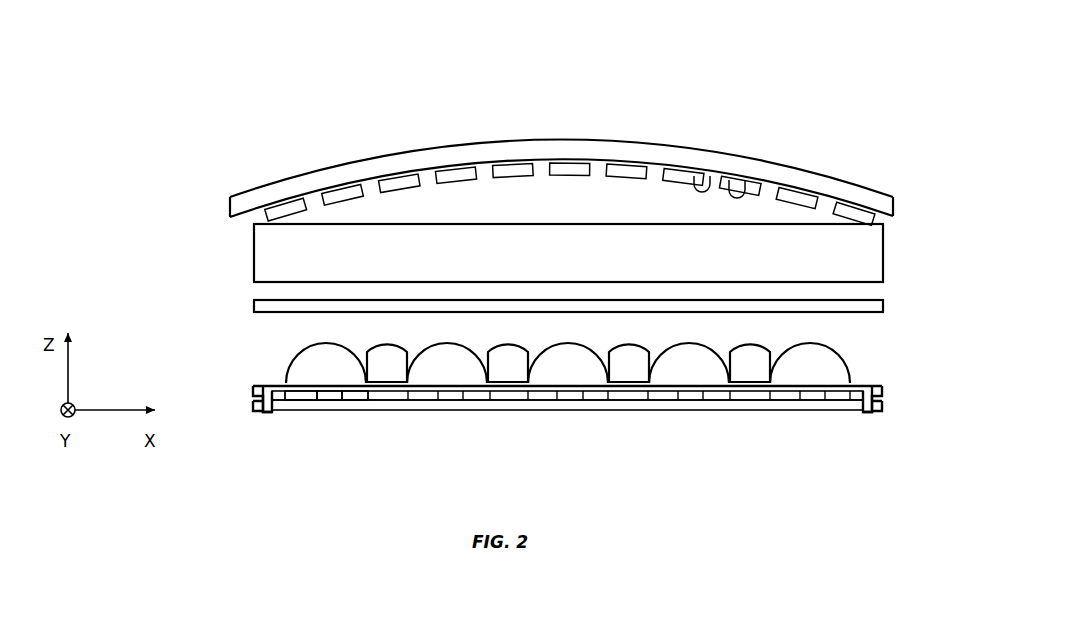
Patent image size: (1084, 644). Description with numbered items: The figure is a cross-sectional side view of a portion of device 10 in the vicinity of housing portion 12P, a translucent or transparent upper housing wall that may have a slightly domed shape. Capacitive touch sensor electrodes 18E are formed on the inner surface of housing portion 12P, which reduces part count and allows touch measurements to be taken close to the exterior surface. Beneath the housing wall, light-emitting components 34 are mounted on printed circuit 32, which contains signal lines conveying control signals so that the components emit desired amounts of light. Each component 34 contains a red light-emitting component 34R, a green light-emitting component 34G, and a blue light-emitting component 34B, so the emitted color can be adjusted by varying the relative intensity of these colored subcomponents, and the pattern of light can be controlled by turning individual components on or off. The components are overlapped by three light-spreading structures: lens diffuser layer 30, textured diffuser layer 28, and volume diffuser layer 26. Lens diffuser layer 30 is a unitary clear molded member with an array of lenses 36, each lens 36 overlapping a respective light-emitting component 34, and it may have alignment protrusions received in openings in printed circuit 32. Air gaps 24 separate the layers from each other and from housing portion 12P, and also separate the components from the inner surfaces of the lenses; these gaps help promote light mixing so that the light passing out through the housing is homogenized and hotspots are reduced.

The device 10 is at (833, 62).
The housing portion 12P is at (905, 203).
The capacitive touch sensor electrodes 18E is at (729, 180).
The air gaps 24 is at (430, 208).
The volume diffuser layer 26 is at (876, 258).
The textured diffuser layer 28 is at (870, 305).
The lens diffuser layer 30 is at (581, 406).
The printed circuit 32 is at (737, 404).
The light-emitting components 34 is at (523, 398).
The red light-emitting component 34R is at (302, 402).
The green light-emitting component 34G is at (334, 402).
The blue light-emitting component 34B is at (355, 402).
The lenses 36 is at (443, 342).